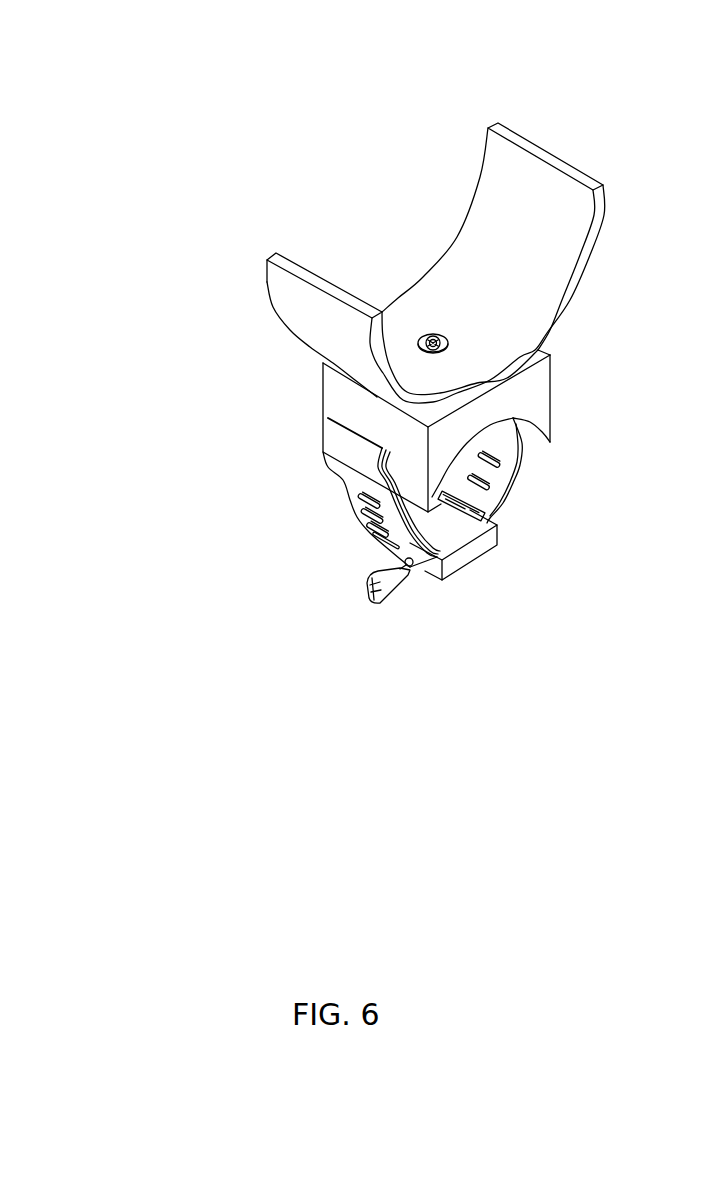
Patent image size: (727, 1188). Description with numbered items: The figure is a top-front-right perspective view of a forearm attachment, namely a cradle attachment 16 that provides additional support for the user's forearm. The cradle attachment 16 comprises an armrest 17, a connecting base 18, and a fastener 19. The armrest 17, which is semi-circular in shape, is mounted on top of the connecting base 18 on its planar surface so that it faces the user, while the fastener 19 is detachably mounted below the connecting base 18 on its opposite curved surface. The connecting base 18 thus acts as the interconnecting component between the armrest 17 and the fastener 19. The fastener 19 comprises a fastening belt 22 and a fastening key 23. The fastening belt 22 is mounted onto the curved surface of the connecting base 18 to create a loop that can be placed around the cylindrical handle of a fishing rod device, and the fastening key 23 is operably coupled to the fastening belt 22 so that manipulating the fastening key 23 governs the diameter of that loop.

The cradle attachment 16 is at (267, 148).
The armrest 17 is at (288, 298).
The connecting base 18 is at (340, 402).
The fastener 19 is at (250, 538).
The fastening belt 22 is at (357, 502).
The fastening key 23 is at (377, 575).